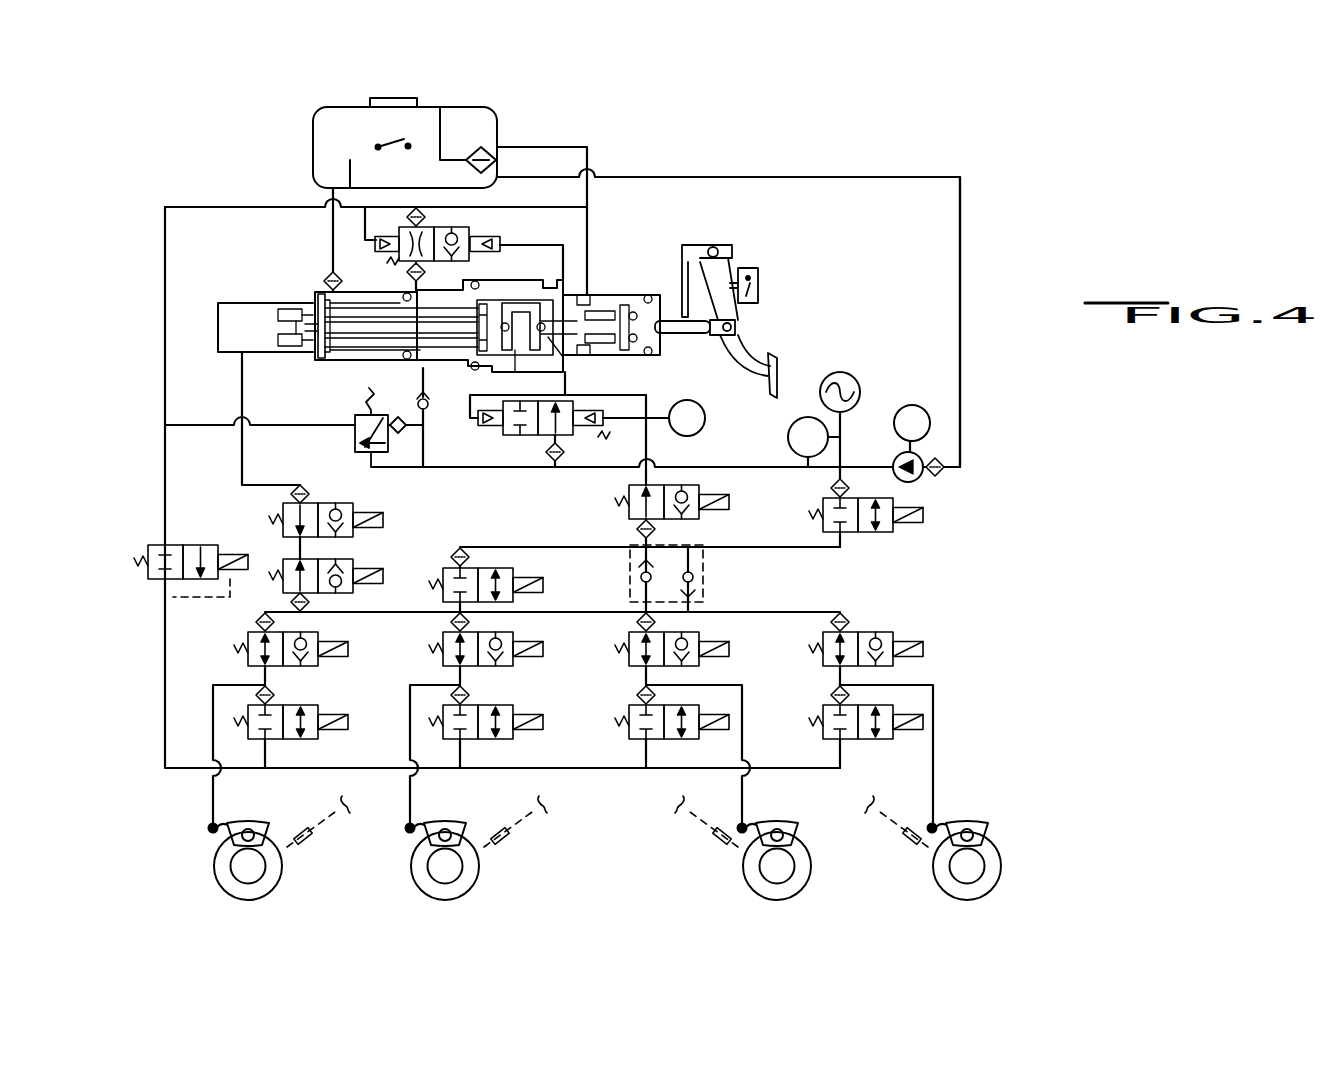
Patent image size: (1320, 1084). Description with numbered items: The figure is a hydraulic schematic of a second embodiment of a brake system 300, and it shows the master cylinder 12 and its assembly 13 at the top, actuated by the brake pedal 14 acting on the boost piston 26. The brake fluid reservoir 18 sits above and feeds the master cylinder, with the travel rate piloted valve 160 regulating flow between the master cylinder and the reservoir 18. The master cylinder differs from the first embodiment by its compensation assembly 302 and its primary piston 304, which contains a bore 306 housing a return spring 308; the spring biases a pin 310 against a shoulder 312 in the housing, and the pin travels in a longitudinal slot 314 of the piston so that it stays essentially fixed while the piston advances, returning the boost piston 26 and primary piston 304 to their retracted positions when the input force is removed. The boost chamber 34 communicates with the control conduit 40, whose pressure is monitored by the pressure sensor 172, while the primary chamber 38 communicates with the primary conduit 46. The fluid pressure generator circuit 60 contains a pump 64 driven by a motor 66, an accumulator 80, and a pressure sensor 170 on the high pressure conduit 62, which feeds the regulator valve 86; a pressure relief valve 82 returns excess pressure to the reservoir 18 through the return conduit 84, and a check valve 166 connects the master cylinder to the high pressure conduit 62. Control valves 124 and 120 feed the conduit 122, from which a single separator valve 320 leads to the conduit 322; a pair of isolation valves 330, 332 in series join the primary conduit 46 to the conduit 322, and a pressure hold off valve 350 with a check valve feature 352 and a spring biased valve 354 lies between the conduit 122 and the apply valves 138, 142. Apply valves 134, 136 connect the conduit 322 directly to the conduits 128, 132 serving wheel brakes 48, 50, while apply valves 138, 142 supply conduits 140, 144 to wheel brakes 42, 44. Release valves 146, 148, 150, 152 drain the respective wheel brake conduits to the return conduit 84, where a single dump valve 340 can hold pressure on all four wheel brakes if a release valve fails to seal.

The brake fluid reservoir 18 is at (463, 107).
The brake system 300 is at (777, 112).
The master cylinder 12 is at (598, 253).
The master cylinder 13 is at (638, 283).
The travel rate piloted valve 160 is at (466, 232).
The compensation assembly 302 is at (233, 283).
The pin 310 is at (322, 293).
The shoulder 312 is at (314, 297).
The bore 306 is at (408, 322).
The primary chamber 38 is at (230, 322).
The longitudinal slot 314 is at (332, 347).
The return spring 308 is at (352, 347).
The primary piston 304 is at (437, 358).
The boost chamber 34 is at (572, 360).
The boost piston 26 is at (618, 350).
The control conduit 40 is at (648, 397).
The brake pedal 14 is at (750, 376).
The pressure sensor 172 is at (707, 420).
The fluid pressure generator circuit 60 is at (864, 317).
The accumulator 80 is at (840, 372).
The motor 66 is at (912, 405).
The pump 64 is at (942, 480).
The return conduit 84 is at (165, 390).
The pressure relief valve 82 is at (355, 434).
The check valve 166 is at (427, 408).
The regulator valve 86 is at (583, 437).
The high pressure conduit 62 is at (690, 467).
The pressure sensor 170 is at (795, 461).
The primary conduit 46 is at (241, 476).
The isolation valve 330 is at (348, 503).
The isolation valve 332 is at (348, 562).
The dump valve 340 is at (188, 545).
The conduit 122 is at (596, 547).
The separator valve 320 is at (513, 568).
The spring biased valve 354 is at (630, 574).
The pressure hold off valve 350 is at (714, 556).
The check valve feature 352 is at (700, 578).
The control valve 124 is at (695, 519).
The control valve 120 is at (892, 533).
The conduit 322 is at (353, 612).
The apply valve 134 is at (318, 633).
The apply valve 136 is at (513, 633).
The apply valve 138 is at (693, 633).
The apply valve 142 is at (866, 632).
The conduit 132 is at (410, 711).
The release valve 148 is at (510, 705).
The release valve 150 is at (692, 706).
The conduit 128 is at (213, 718).
The release valve 146 is at (318, 739).
The conduit 140 is at (744, 727).
The release valve 152 is at (855, 740).
The conduit 144 is at (935, 714).
The wheel brake 48 is at (248, 822).
The wheel brake 50 is at (445, 822).
The wheel brake 42 is at (778, 822).
The wheel brake 44 is at (968, 822).